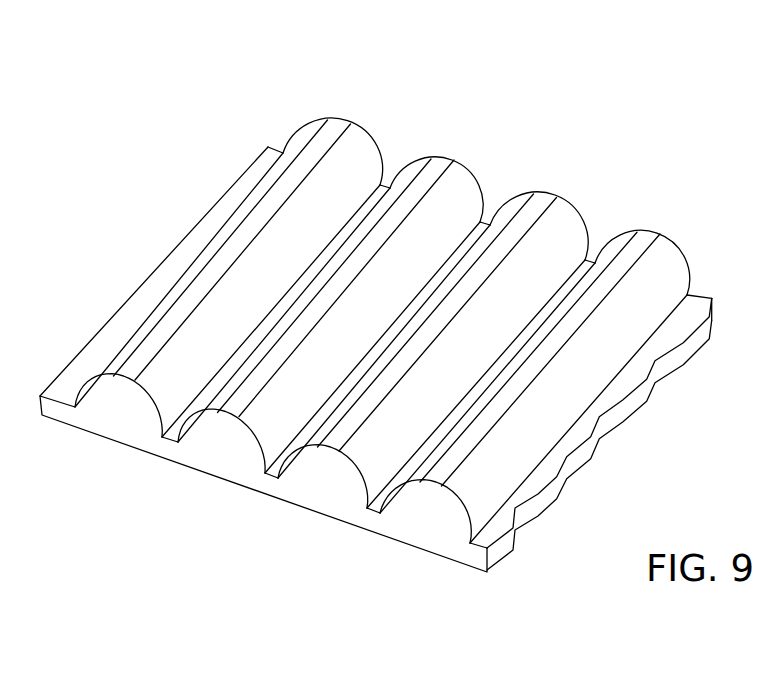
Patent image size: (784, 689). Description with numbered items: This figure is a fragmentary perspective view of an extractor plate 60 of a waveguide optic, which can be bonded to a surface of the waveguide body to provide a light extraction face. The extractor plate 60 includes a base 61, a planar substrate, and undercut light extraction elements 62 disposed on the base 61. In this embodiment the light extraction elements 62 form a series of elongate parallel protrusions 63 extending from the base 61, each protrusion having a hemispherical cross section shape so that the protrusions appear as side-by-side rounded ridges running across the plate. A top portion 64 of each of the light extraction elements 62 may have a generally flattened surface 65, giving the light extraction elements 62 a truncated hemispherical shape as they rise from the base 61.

The extractor plate 60 is at (393, 306).
The base 61 is at (57, 410).
The light extraction elements 62 is at (393, 308).
The elongate parallel protrusions 63 is at (137, 345).
The top portion 64 is at (362, 143).
The flattened surface 65 is at (342, 132).